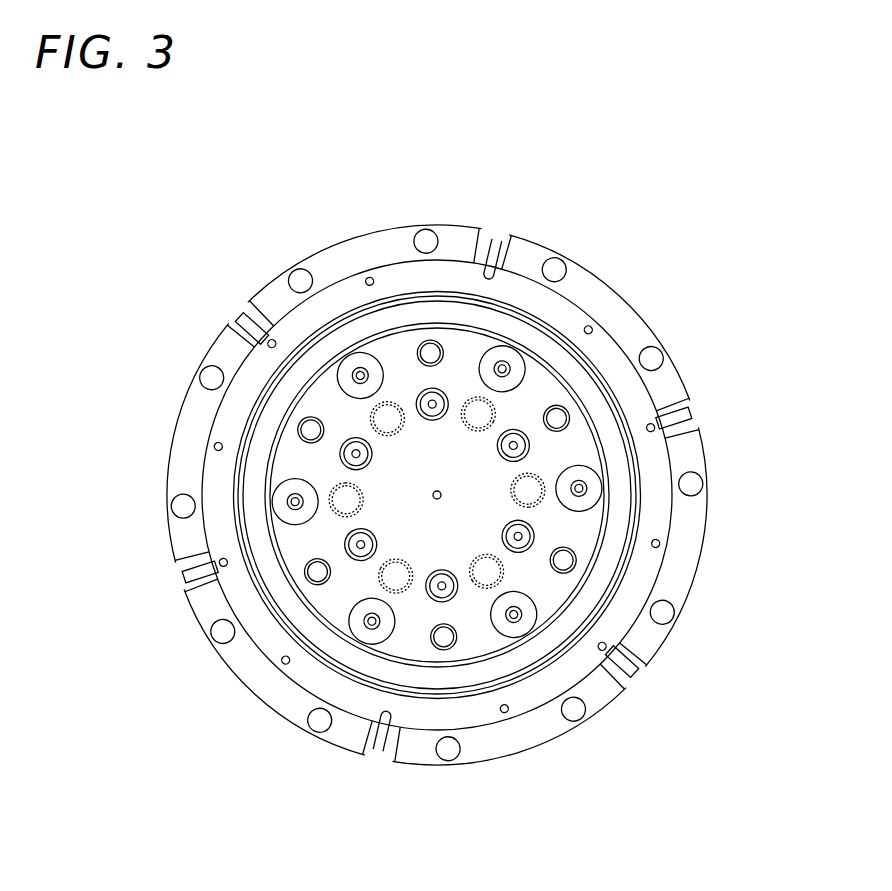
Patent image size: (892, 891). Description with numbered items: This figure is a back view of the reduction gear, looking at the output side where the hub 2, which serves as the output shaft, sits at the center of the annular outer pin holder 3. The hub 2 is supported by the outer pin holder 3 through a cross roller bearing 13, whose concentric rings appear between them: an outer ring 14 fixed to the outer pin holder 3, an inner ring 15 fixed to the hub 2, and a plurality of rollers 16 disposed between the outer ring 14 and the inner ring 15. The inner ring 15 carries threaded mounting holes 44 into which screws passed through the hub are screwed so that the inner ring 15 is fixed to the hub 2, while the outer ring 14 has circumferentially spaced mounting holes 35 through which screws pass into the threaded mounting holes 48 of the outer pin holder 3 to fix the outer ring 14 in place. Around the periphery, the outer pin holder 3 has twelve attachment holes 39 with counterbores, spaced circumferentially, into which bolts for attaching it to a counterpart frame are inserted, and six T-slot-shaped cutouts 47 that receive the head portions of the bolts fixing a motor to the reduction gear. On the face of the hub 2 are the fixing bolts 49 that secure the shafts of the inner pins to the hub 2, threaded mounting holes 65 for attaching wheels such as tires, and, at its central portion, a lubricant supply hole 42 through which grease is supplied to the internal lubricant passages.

The hub 2 is at (400, 373).
The outer pin holder 3 is at (537, 250).
The cross roller bearing 13 is at (568, 311).
The outer ring 14 is at (625, 400).
The inner ring 15 is at (615, 508).
The rollers 16 is at (633, 455).
The mounting holes 35 is at (487, 273).
The attachment holes 39 is at (305, 277).
The lubricant supply hole 42 is at (441, 500).
The threaded mounting holes 44 is at (300, 431).
The T-slot-shaped cutouts 47 is at (487, 262).
The threaded mounting holes 48 is at (388, 708).
The fixing bolts 49 is at (583, 482).
The threaded mounting holes 65 is at (398, 581).